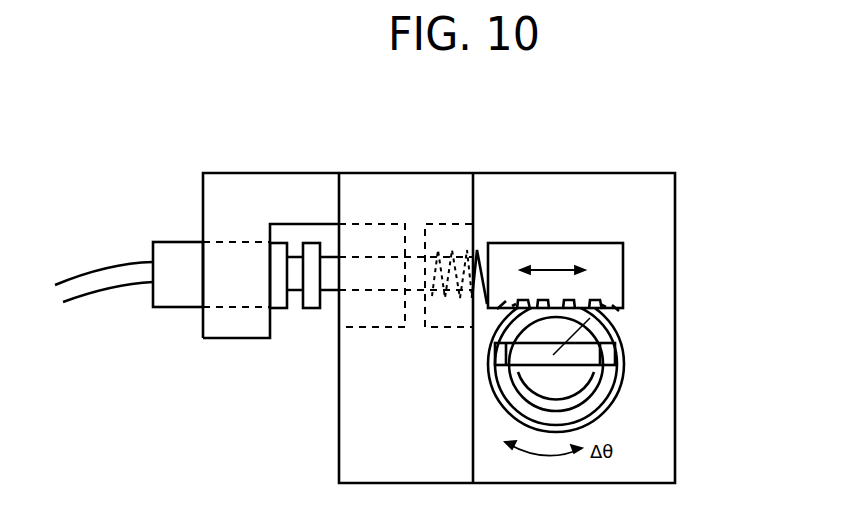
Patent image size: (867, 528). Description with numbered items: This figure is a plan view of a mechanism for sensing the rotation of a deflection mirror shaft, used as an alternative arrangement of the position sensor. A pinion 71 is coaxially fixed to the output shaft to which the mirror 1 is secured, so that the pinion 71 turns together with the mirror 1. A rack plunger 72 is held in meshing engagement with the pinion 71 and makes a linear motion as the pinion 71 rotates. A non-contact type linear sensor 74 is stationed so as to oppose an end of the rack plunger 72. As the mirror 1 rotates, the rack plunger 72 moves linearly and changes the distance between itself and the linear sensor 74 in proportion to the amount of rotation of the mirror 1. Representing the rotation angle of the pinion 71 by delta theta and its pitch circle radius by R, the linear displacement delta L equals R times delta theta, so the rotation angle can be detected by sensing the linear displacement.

The mirror 1 is at (615, 352).
The pinion 71 is at (577, 383).
The rack plunger 72 is at (572, 247).
The non-contact type linear sensor 74 is at (172, 300).